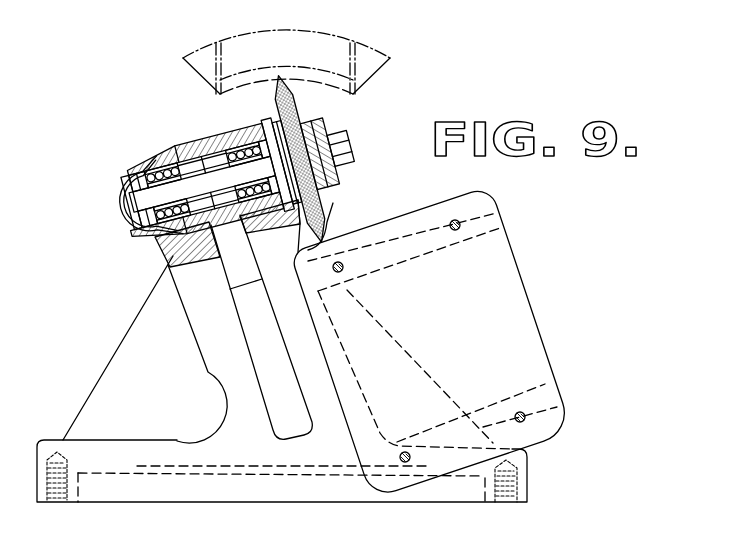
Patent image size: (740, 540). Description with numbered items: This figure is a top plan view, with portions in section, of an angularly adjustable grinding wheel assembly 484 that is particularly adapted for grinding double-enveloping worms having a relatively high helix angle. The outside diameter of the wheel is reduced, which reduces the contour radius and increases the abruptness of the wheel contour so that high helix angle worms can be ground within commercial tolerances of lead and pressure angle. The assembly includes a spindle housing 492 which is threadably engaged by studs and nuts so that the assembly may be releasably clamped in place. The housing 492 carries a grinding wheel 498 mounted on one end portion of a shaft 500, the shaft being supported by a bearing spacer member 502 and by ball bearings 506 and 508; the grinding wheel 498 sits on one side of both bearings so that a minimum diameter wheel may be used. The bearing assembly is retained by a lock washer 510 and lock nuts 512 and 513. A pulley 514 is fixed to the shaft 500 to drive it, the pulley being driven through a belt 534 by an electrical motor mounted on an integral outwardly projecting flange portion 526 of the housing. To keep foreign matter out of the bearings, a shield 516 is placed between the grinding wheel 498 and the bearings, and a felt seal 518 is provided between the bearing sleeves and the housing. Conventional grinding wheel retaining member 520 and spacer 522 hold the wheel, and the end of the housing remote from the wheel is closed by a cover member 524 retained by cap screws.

The grinding wheel assembly 484 is at (218, 176).
The spindle housing 492 is at (193, 315).
The grinding wheel 498 is at (328, 207).
The shaft 500 is at (208, 182).
The bearing spacer member 502 is at (198, 185).
The ball bearing 506 is at (143, 199).
The ball bearing 508 is at (248, 172).
The lock washer 510 is at (131, 202).
The lock nut 512 is at (146, 200).
The lock nut 513 is at (319, 154).
The pulley 514 is at (202, 184).
The shield 516 is at (308, 245).
The felt seal 518 is at (167, 250).
The grinding wheel retaining member 520 is at (340, 148).
The grinding wheel spacer 522 is at (300, 158).
The cover member 524 is at (146, 200).
The flange portion 526 is at (548, 419).
The belt 534 is at (181, 190).